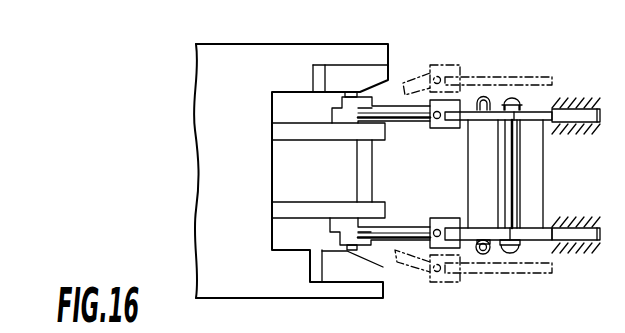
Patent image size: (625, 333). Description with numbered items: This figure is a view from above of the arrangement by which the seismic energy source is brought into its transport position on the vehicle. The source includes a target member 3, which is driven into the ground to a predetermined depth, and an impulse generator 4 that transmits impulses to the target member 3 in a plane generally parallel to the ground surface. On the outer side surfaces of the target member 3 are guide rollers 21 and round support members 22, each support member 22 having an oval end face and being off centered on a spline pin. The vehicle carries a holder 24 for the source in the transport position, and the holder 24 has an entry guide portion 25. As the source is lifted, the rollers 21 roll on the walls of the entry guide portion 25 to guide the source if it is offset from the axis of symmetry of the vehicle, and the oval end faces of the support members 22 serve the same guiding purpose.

The target member 3 is at (475, 232).
The impulse generator 4 is at (468, 192).
The guide rollers 21 is at (487, 257).
The round support members 22 is at (513, 253).
The holder 24 is at (332, 73).
The entry guide portion 25 is at (378, 72).